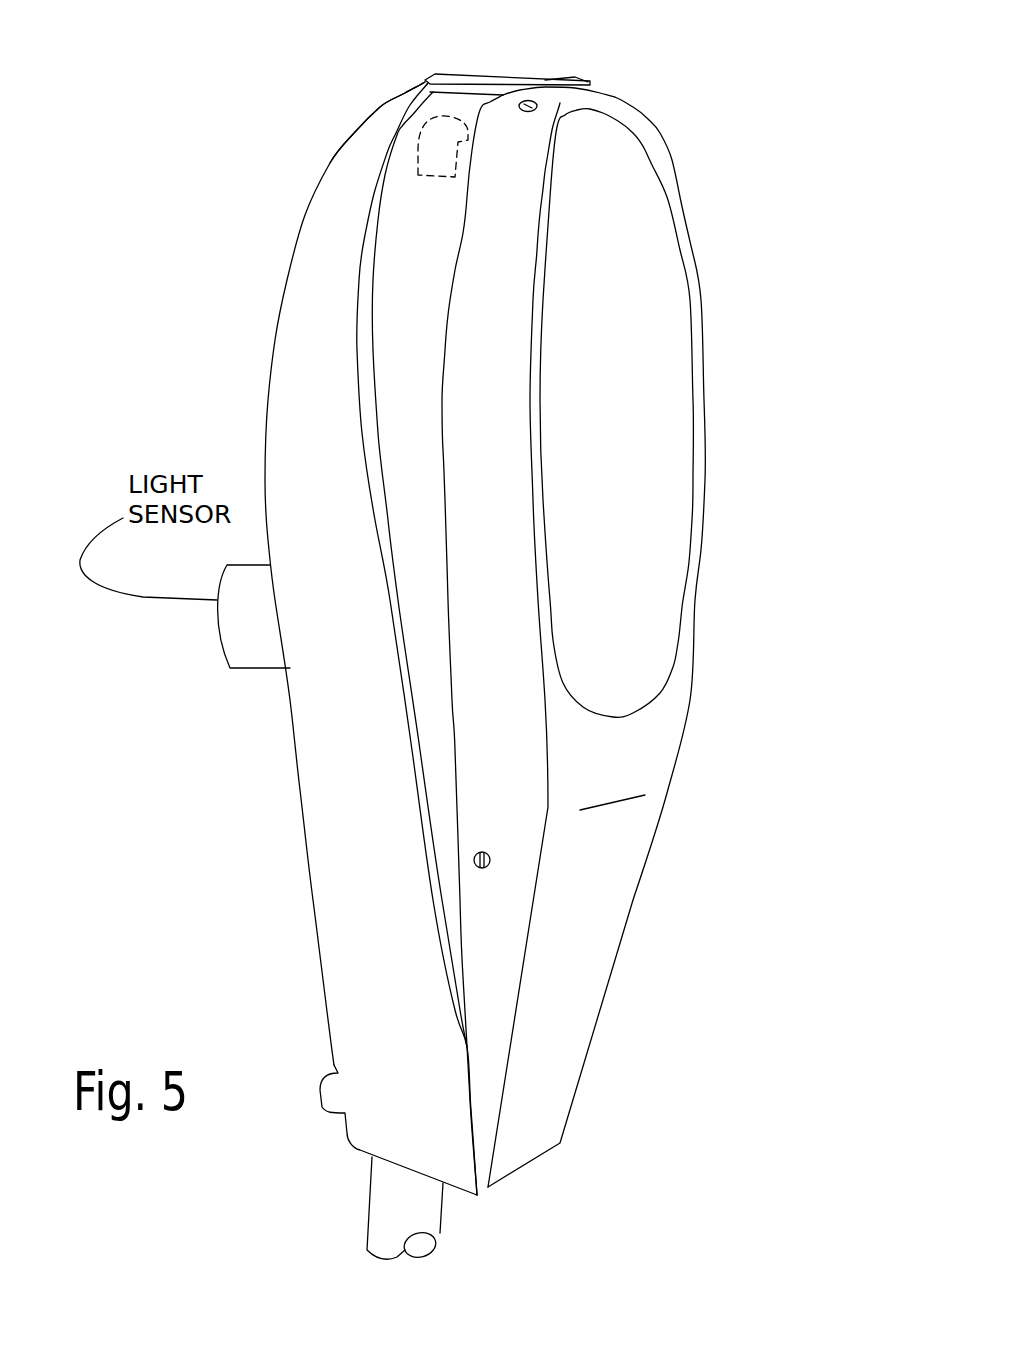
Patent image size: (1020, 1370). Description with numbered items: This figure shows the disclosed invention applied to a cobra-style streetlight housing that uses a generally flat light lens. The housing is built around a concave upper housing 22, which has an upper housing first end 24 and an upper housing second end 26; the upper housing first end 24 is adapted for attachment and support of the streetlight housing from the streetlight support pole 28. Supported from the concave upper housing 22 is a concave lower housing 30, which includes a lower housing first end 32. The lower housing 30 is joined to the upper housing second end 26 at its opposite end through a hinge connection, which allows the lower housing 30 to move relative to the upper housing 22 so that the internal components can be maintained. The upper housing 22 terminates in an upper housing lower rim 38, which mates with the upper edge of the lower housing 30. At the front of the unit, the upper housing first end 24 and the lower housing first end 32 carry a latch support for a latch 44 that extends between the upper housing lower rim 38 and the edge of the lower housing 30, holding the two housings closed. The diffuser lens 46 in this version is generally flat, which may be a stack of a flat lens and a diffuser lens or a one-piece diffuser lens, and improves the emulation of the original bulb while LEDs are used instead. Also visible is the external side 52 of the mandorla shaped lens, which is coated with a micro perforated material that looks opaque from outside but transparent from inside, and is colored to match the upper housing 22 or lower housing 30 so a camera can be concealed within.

The concave upper housing 22 is at (367, 777).
The upper housing first end 24 is at (323, 1020).
The upper housing second end 26 is at (383, 105).
The streetlight support pole 28 is at (370, 1185).
The concave lower housing 30 is at (633, 107).
The lower housing first end 32 is at (516, 670).
The upper housing lower rim 38 is at (373, 250).
The latch 44 is at (480, 72).
The diffuser lens 46 is at (635, 452).
The external side 52 is at (431, 272).